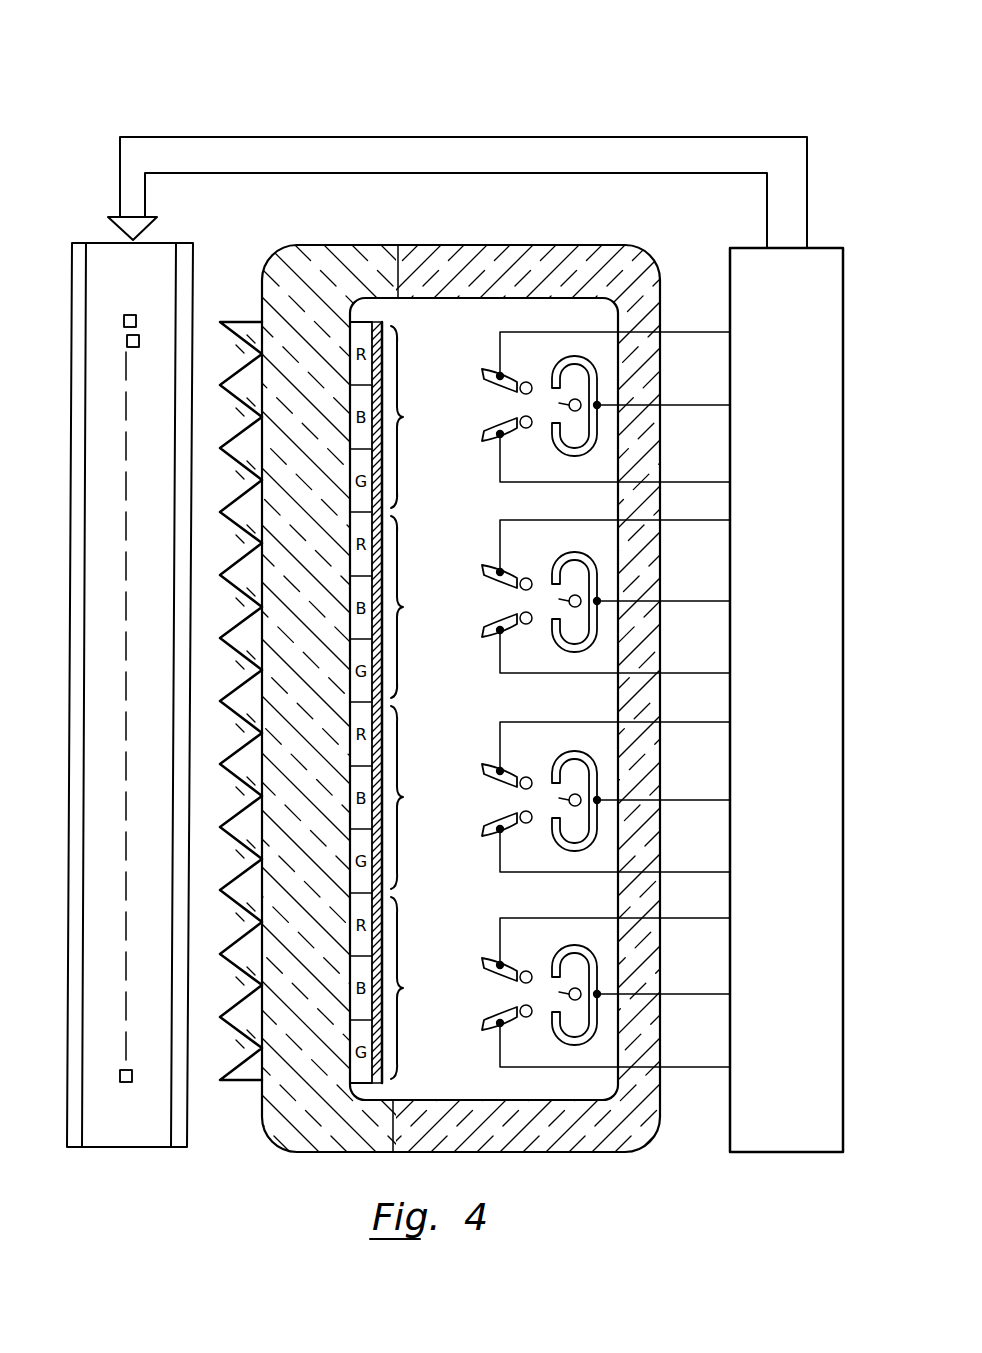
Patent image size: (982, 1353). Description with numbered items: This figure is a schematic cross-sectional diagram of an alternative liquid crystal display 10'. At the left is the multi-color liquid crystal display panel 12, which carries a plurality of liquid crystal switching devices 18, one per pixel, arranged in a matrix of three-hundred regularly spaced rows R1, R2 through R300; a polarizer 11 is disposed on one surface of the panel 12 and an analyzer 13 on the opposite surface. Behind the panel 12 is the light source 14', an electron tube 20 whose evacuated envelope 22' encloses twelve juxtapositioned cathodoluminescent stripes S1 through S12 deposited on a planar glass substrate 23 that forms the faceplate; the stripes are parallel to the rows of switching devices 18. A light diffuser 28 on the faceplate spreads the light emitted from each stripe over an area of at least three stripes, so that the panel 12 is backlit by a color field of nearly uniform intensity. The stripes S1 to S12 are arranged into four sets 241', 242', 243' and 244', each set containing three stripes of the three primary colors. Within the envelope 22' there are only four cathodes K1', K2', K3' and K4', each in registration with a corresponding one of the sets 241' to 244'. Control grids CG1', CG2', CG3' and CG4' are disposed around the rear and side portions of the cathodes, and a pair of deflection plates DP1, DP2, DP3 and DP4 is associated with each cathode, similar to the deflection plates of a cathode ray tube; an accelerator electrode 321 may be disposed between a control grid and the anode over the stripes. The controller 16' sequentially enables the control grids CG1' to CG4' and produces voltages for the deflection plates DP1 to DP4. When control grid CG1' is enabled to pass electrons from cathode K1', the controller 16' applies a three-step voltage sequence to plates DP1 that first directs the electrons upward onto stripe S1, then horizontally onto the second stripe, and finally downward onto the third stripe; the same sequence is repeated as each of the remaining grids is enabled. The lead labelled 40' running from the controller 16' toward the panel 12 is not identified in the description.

The liquid crystal display 10' is at (206, 58).
The scan/control signal connection 40' is at (457, 163).
The multi-color liquid crystal display panel 12 is at (105, 240).
The polarizer 11 is at (194, 262).
The analyzer 13 is at (70, 322).
The liquid crystal switching device 18 is at (131, 314).
The first row of switching devices R1 is at (123, 320).
The second row of switching devices R2 is at (127, 345).
The three-hundredth row of switching devices R300 is at (118, 1076).
The light diffuser 28 is at (247, 320).
The glass substrate 23 is at (307, 243).
The envelope 22' is at (358, 674).
The light source 14' is at (491, 672).
The electron tube 20 is at (612, 245).
The controller 16' is at (810, 700).
The cathodoluminescent stripe S1 is at (362, 324).
The cathodoluminescent stripe S12 is at (365, 1083).
The first set of cathodoluminescent stripes 241' is at (414, 417).
The second set of cathodoluminescent stripes 242' is at (414, 607).
The third set of cathodoluminescent stripes 243' is at (414, 797).
The fourth set of cathodoluminescent stripes 244' is at (414, 988).
The pair of deflection plates DP1 is at (491, 415).
The pair of deflection plates DP2 is at (491, 611).
The pair of deflection plates DP3 is at (491, 810).
The pair of deflection plates DP4 is at (491, 1004).
The control grid CG1' is at (615, 407).
The control grid CG2' is at (615, 596).
The control grid CG3' is at (615, 797).
The control grid CG4' is at (615, 992).
The cathode K1' is at (629, 406).
The cathode K2' is at (625, 602).
The cathode K3' is at (625, 801).
The cathode K4' is at (625, 995).
The accelerator electrode 321 is at (526, 440).